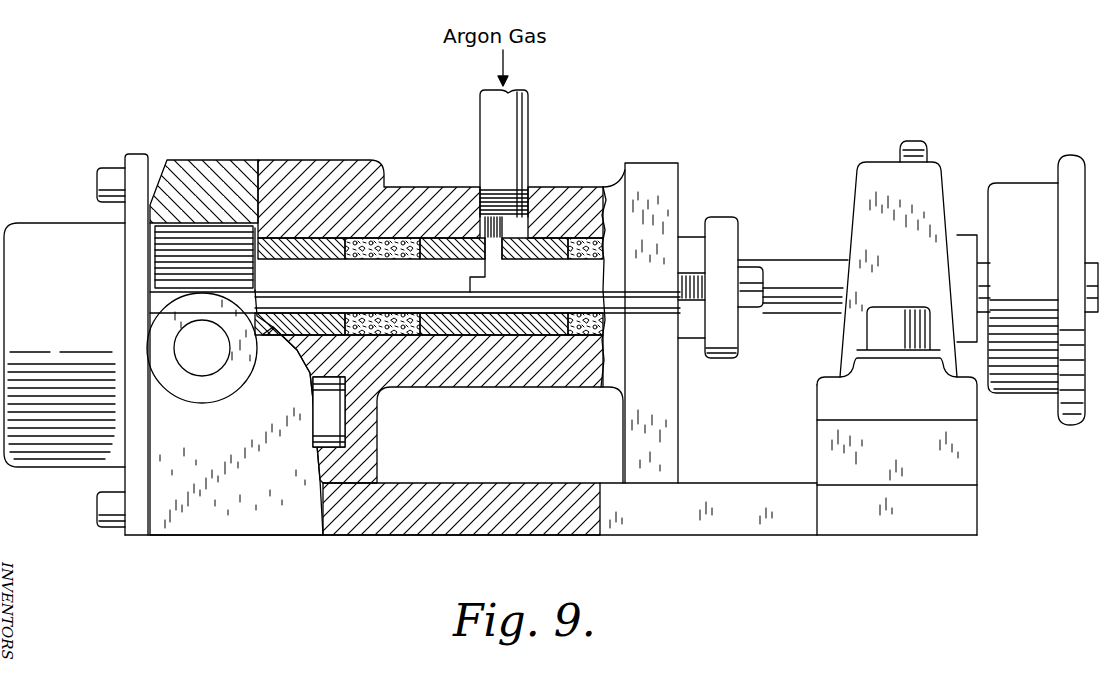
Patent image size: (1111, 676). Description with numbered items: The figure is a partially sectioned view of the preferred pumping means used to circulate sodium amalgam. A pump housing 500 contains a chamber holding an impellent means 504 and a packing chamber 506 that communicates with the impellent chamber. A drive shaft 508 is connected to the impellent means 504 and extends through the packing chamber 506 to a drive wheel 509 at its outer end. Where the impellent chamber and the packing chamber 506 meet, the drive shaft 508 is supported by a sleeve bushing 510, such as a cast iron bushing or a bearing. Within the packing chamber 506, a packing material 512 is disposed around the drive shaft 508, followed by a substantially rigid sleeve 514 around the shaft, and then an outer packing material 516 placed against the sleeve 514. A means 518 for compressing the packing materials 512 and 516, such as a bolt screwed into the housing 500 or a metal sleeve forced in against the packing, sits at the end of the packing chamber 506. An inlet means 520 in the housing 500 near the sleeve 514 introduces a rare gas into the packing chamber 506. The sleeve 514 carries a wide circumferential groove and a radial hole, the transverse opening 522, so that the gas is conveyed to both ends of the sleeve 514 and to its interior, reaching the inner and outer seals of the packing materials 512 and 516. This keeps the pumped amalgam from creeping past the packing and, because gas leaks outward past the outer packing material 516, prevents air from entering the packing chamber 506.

The pump housing 500 is at (358, 192).
The impellent means 504 is at (203, 240).
The packing chamber 506 is at (532, 250).
The drive shaft 508 is at (583, 283).
The drive wheel 509 is at (1023, 210).
The sleeve bushing 510 is at (295, 252).
The packing material 512 is at (397, 245).
The sleeve 514 is at (443, 245).
The outer packing material 516 is at (597, 220).
The means for compressing the packing materials 518 is at (720, 232).
The inlet means 520 is at (510, 113).
The transverse opening 522 is at (497, 258).